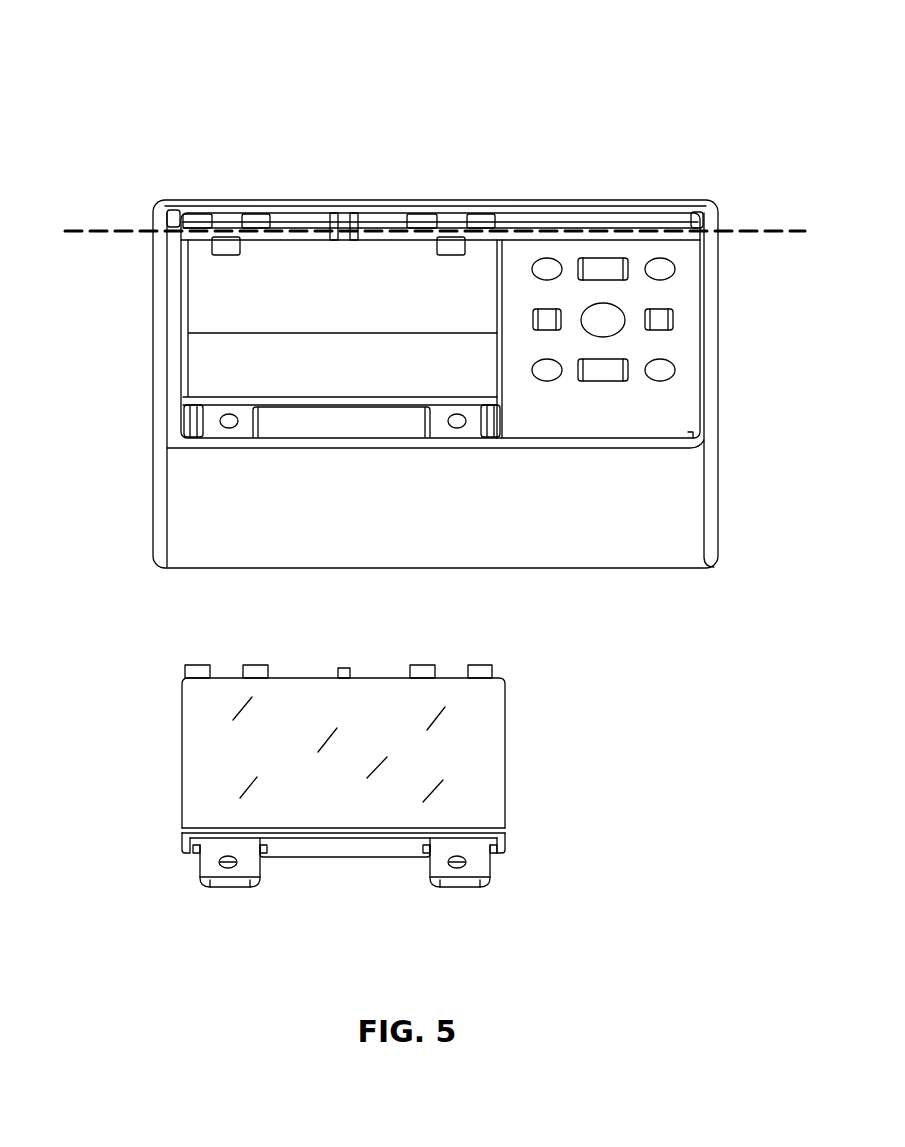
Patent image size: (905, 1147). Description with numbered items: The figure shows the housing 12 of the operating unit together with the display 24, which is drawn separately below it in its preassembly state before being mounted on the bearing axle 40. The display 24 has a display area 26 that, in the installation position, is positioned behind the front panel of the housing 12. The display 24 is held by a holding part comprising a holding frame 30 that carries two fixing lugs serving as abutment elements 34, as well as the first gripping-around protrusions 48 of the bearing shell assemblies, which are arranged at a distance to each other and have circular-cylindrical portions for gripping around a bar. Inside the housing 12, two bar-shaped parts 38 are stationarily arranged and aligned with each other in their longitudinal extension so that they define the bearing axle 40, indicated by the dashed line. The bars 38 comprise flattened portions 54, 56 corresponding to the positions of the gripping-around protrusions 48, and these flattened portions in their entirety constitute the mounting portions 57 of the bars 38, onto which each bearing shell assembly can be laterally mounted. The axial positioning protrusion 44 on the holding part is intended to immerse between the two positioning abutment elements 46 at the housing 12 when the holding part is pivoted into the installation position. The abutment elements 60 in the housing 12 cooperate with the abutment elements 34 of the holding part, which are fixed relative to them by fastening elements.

The housing 12 is at (664, 497).
The display 24 is at (210, 733).
The display area 26 is at (460, 767).
The holding frame 30 is at (327, 850).
The abutment elements 34 is at (210, 863).
The bar-shaped parts 38 is at (275, 226).
The bearing axle 40 is at (86, 228).
The axial positioning protrusion 44 is at (343, 673).
The positioning abutment elements 46 is at (332, 214).
The first gripping-around protrusions 48 is at (205, 677).
The flattened portions 54 is at (196, 218).
The flattened portions 56 is at (218, 246).
The mounting portions 57 is at (217, 272).
The abutment elements 60 is at (240, 428).